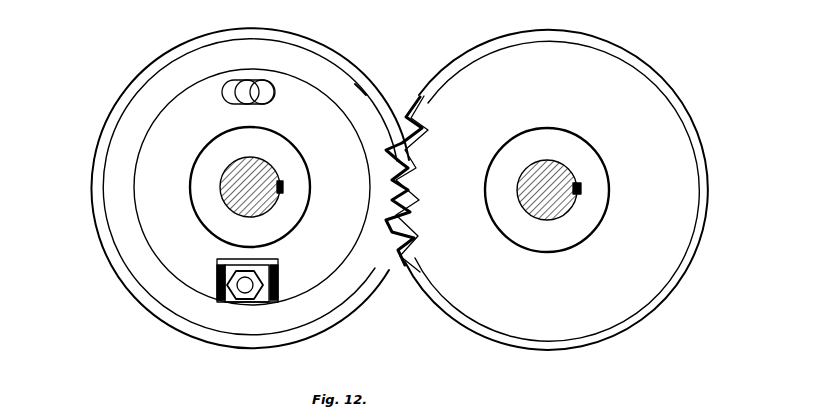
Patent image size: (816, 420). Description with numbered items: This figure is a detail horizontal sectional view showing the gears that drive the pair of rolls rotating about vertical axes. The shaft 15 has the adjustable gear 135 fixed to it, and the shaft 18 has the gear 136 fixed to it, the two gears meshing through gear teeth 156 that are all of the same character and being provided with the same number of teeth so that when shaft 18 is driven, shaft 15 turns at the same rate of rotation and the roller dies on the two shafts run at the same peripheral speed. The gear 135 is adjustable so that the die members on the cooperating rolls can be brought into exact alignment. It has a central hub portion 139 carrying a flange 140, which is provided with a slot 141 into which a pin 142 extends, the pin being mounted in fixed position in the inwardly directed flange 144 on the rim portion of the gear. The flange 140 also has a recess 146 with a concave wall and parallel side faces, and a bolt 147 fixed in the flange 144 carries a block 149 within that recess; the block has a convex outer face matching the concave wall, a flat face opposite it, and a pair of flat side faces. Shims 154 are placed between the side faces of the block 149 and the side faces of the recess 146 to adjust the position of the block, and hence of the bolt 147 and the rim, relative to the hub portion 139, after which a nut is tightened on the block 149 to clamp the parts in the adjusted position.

The shaft 15 is at (228, 178).
The shaft 18 is at (573, 186).
The gear 135 is at (100, 172).
The gear 136 is at (656, 108).
The central hub portion 139 is at (285, 160).
The flange 140 is at (333, 264).
The slot 141 is at (270, 92).
The pin 142 is at (223, 95).
The inwardly directed flange 144 is at (343, 90).
The recess 146 is at (279, 263).
The bolt 147 is at (243, 281).
The block 149 is at (258, 301).
The shims 154 is at (217, 283).
The gear teeth 156 is at (392, 167).